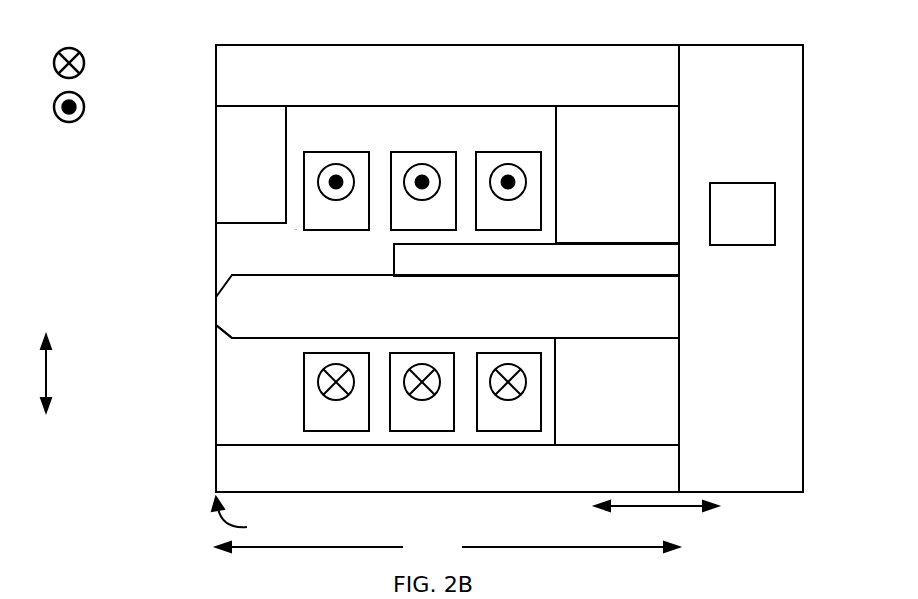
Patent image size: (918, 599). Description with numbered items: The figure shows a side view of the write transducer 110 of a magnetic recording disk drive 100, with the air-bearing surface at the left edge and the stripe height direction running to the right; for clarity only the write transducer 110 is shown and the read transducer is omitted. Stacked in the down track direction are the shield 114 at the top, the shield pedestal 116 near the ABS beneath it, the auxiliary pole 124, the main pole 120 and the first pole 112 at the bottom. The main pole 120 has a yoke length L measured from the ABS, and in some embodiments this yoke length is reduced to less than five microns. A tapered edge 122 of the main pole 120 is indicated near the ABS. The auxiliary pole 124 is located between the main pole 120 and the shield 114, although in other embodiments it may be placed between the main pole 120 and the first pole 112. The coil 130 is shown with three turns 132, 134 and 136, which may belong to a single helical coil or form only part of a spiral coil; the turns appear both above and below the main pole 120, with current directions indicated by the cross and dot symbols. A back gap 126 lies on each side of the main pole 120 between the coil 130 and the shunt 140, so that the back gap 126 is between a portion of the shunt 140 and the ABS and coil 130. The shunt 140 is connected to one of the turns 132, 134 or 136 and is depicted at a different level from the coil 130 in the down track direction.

The disk drive 100 is at (97, 37).
The write transducer 110 is at (421, 302).
The first pole 112 is at (447, 468).
The shield 114 is at (447, 75).
The shield pedestal 116 is at (251, 164).
The main pole 120 is at (447, 306).
The tapered edge of main pole 122 is at (226, 350).
The auxiliary pole 124 is at (536, 260).
The back gap 126 is at (617, 275).
The coil 130 is at (284, 233).
The first turn 132 is at (336, 291).
The second turn 134 is at (423, 291).
The third turn 136 is at (508, 291).
The shunt 140 is at (742, 214).